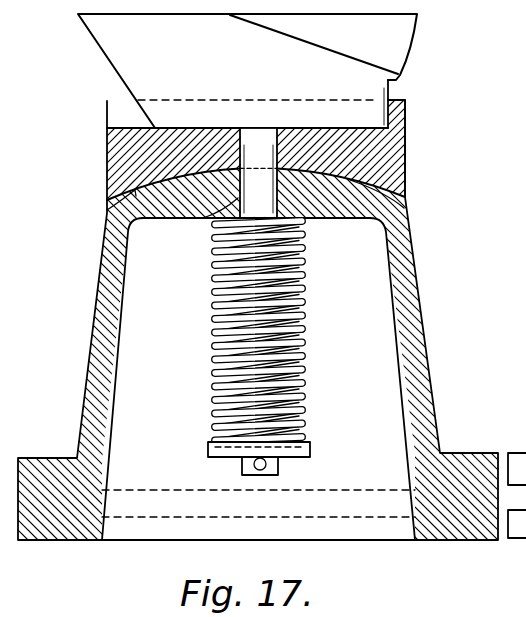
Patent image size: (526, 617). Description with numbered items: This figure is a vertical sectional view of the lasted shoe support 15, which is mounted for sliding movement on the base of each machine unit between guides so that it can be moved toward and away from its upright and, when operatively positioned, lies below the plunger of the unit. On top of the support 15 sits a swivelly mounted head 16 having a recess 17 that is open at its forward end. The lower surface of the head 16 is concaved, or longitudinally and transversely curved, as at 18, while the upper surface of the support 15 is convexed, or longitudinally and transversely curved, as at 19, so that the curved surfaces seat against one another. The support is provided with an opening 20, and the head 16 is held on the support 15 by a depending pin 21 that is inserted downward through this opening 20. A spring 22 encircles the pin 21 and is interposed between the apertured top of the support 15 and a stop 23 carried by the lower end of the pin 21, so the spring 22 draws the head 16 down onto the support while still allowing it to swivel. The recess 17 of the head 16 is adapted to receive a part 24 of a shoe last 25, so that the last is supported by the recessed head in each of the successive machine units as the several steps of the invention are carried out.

The lasted shoe support 15 is at (97, 300).
The head 16 is at (112, 152).
The recess 17 is at (392, 113).
The concaved lower surface 18 is at (140, 186).
The convexed upper surface 19 is at (107, 210).
The opening 20 is at (191, 218).
The depending pin 21 is at (272, 465).
The spring 22 is at (305, 289).
The stop 23 is at (310, 445).
The part of shoe last 24 is at (264, 100).
The shoe last 25 is at (82, 28).